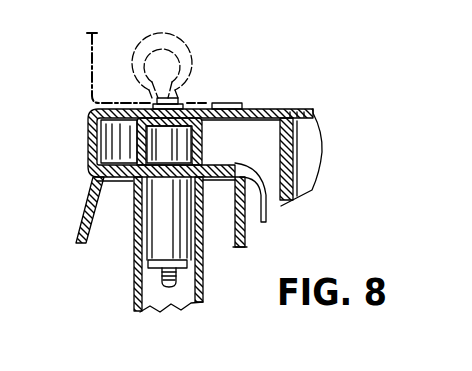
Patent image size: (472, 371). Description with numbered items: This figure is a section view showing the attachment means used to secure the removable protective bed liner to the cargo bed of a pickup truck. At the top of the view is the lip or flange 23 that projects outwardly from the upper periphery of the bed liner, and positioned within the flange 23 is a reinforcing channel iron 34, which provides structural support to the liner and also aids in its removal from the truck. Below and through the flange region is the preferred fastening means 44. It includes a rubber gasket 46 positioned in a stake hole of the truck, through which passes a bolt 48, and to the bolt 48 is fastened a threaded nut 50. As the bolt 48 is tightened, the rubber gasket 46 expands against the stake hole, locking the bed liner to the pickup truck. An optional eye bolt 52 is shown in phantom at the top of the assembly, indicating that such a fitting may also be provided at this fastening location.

The lip or flange 23 is at (92, 132).
The channel iron 34 is at (140, 143).
The fastening means 44 is at (170, 172).
The rubber gasket 46 is at (153, 232).
The bolt 48 is at (186, 100).
The threaded nut 50 is at (183, 268).
The eye bolt 52 is at (191, 62).